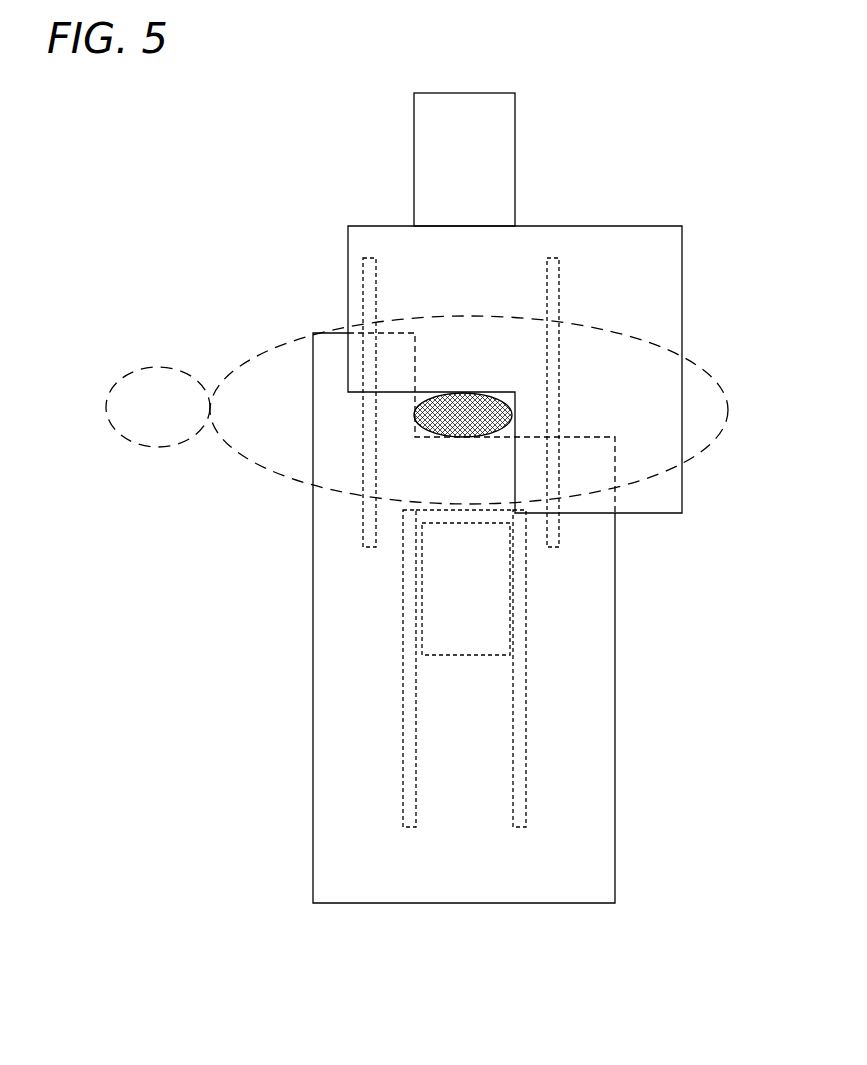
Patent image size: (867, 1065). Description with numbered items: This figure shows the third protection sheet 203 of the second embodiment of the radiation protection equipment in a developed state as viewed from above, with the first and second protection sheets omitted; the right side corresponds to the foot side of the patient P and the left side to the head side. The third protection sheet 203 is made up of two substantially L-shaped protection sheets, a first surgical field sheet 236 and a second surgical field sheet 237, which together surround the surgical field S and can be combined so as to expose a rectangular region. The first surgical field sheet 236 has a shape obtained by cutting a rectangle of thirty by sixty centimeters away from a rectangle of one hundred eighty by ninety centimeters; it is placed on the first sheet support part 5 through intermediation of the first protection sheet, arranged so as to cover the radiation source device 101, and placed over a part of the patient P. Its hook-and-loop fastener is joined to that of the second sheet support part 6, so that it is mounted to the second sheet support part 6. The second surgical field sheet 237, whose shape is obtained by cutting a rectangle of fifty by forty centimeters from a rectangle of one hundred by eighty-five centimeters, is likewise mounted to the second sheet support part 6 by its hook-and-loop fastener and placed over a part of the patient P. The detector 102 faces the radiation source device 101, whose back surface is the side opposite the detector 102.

The first sheet support part 5 is at (410, 803).
The second sheet support part 6 is at (553, 265).
The radiation source device 101 is at (484, 602).
The detector 102 is at (484, 172).
The third protection sheet 203 is at (724, 202).
The first surgical field sheet 236 is at (483, 892).
The second surgical field sheet 237 is at (533, 260).
The patient P is at (703, 368).
The surgical field S is at (468, 392).